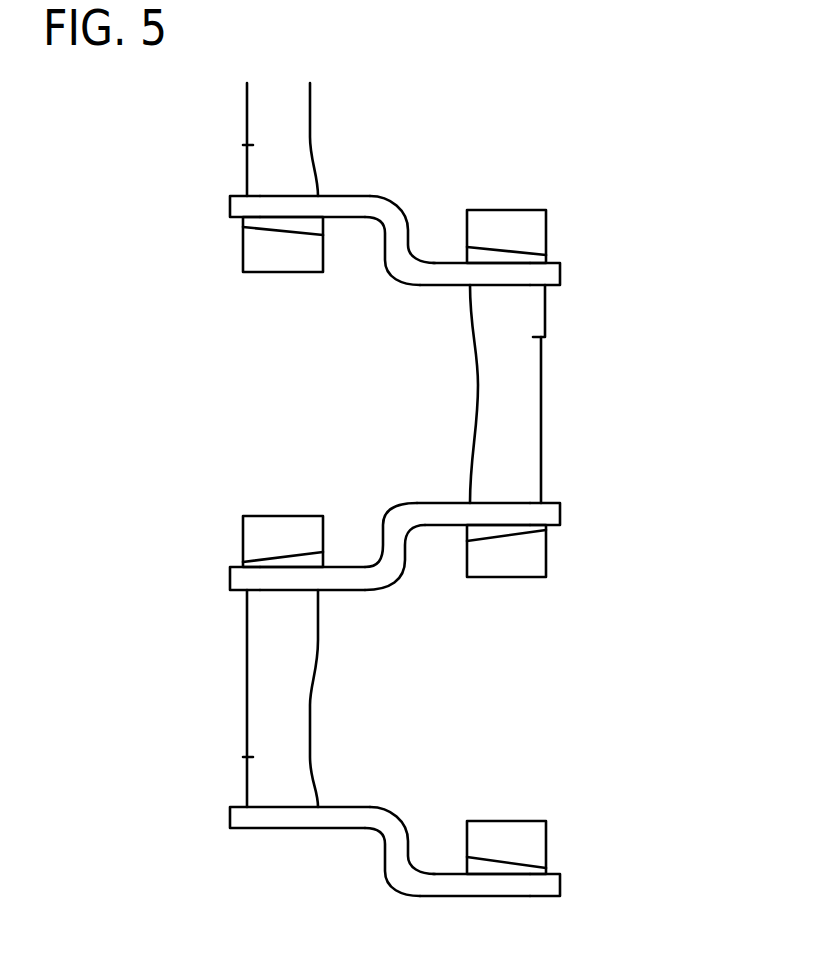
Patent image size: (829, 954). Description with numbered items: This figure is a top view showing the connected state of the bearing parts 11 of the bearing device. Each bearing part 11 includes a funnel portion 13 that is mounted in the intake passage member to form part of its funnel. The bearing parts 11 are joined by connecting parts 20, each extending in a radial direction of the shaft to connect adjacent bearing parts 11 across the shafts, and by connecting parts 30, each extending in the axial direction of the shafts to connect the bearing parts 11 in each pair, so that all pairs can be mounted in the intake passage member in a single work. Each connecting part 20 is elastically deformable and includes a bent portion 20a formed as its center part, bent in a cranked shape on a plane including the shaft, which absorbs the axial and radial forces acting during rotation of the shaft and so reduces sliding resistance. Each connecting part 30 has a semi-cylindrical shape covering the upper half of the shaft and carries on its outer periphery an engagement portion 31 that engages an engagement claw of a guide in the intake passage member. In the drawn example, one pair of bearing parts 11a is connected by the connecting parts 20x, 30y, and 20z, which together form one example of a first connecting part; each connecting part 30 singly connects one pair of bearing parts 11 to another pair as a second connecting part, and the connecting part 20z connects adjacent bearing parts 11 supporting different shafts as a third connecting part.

The bearing part 11 is at (214, 234).
The bearing part 11a is at (588, 521).
The funnel portion 13 is at (283, 273).
The connecting part 20 is at (343, 195).
The bent portion 20a is at (390, 202).
The connecting part 20x is at (343, 807).
The connecting part 20z is at (447, 502).
The connecting part 30 is at (544, 382).
The connecting part 30y is at (247, 683).
The engagement portion 31 is at (246, 167).